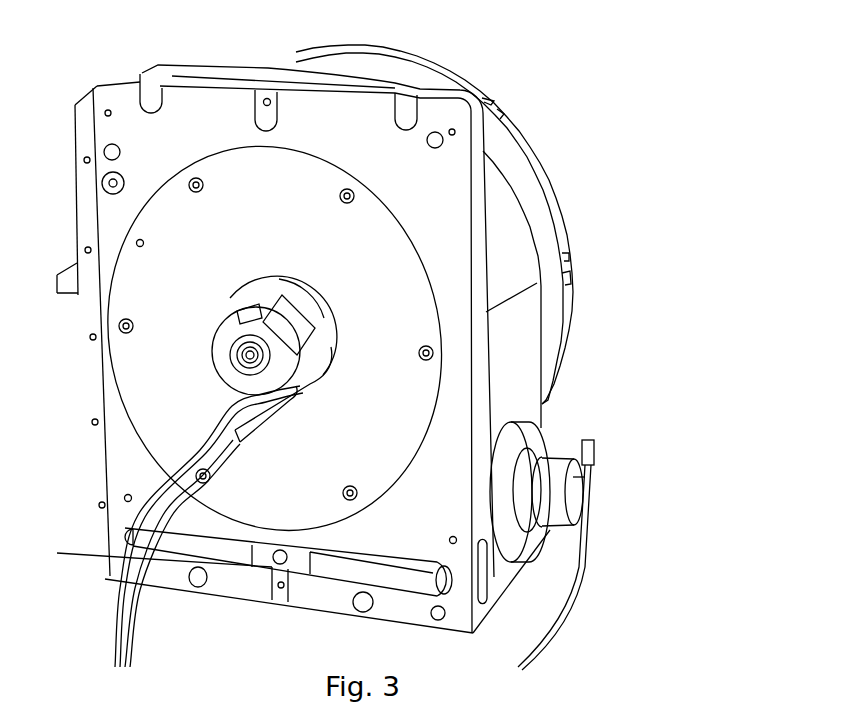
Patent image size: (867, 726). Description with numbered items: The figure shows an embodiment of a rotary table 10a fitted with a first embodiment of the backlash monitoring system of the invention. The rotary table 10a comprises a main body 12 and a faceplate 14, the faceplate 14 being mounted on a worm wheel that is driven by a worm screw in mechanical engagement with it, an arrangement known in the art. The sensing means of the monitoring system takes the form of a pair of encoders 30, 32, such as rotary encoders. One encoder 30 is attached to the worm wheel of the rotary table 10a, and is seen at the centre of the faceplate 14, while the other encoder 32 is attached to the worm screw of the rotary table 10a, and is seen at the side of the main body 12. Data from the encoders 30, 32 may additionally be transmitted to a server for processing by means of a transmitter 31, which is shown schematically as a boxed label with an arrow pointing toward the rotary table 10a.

The rotary table 10a is at (552, 84).
The main body 12 is at (525, 373).
The faceplate 14 is at (542, 220).
The encoder 30 is at (245, 337).
The transmitter 31 is at (352, 329).
The encoder 32 is at (547, 500).